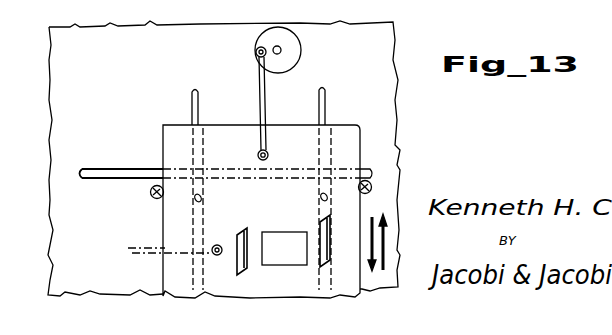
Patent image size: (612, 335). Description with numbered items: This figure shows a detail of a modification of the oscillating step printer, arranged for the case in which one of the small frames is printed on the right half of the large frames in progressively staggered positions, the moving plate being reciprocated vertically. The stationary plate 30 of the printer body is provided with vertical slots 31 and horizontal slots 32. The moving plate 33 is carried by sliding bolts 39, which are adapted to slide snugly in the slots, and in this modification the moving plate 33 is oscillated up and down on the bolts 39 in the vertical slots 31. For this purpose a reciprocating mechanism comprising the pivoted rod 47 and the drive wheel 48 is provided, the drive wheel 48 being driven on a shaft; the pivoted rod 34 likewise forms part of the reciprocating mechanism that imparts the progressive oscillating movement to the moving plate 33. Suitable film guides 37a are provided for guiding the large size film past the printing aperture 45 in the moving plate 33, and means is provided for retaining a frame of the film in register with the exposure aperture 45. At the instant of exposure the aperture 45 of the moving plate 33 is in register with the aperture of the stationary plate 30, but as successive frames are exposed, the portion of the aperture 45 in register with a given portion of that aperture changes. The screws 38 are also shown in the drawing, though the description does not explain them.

The stationary plate 30 is at (62, 63).
The vertical slots 31 is at (190, 97).
The horizontal slots 32 is at (95, 168).
The moving plate 33 is at (165, 149).
The pivoted rod 34 is at (136, 257).
The film guides 37a is at (240, 245).
The screws 38 is at (150, 196).
The sliding bolts 39 is at (202, 198).
The printing aperture 45 is at (280, 240).
The pivoted rod 47 is at (262, 106).
The drive wheel 48 is at (290, 60).